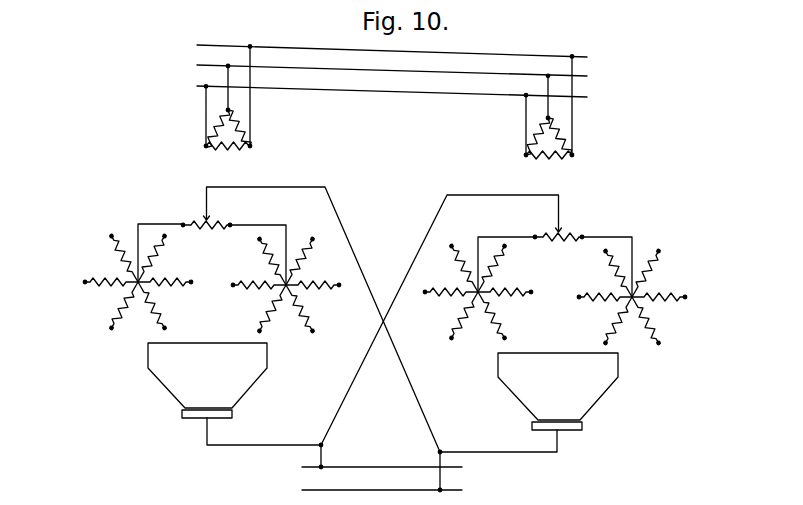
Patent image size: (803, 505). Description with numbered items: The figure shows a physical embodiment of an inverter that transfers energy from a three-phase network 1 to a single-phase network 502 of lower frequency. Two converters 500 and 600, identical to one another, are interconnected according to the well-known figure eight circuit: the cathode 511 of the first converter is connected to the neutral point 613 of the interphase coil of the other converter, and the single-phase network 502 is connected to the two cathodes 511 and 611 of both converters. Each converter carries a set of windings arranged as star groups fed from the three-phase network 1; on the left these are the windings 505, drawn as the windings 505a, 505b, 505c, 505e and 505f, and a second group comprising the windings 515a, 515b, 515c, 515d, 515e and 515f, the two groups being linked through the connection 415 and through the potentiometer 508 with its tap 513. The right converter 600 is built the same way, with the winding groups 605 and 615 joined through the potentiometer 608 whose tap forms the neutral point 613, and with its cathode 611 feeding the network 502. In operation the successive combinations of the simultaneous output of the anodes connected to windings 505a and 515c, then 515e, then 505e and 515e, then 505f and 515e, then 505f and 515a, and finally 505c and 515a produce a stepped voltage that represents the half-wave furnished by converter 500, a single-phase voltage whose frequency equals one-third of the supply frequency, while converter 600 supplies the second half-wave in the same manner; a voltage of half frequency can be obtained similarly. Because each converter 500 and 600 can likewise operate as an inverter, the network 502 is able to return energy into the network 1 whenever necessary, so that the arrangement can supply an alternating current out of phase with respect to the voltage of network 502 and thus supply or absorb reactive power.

The network 1 is at (600, 42).
The converter 500 is at (70, 210).
The single-phase network 502 is at (470, 462).
The windings 505 is at (144, 272).
The winding 505a is at (122, 263).
The resistor of star network 505 505b is at (121, 287).
The winding 505c is at (120, 313).
The winding 505e is at (174, 272).
The winding 505f is at (158, 264).
The potentiometer 508 is at (187, 221).
The cathode 511 is at (190, 420).
The potentiometer wiper tap and crossover connection 513 is at (213, 220).
The connection line to second star network 415 is at (288, 260).
The winding 515a is at (278, 263).
The resistor of second star network 515b is at (270, 277).
The winding 515c is at (270, 329).
The resistor of second star network 515d is at (294, 328).
The winding 515e is at (317, 299).
The resistor of second star network 515f is at (296, 263).
The converter 600 is at (703, 228).
The star resistor network (right channel) 605 is at (476, 267).
The potentiometer 608 is at (558, 244).
The cathode 611 is at (570, 430).
The neutral point 613 is at (559, 233).
The star resistor network (right channel, second) 615 is at (633, 268).